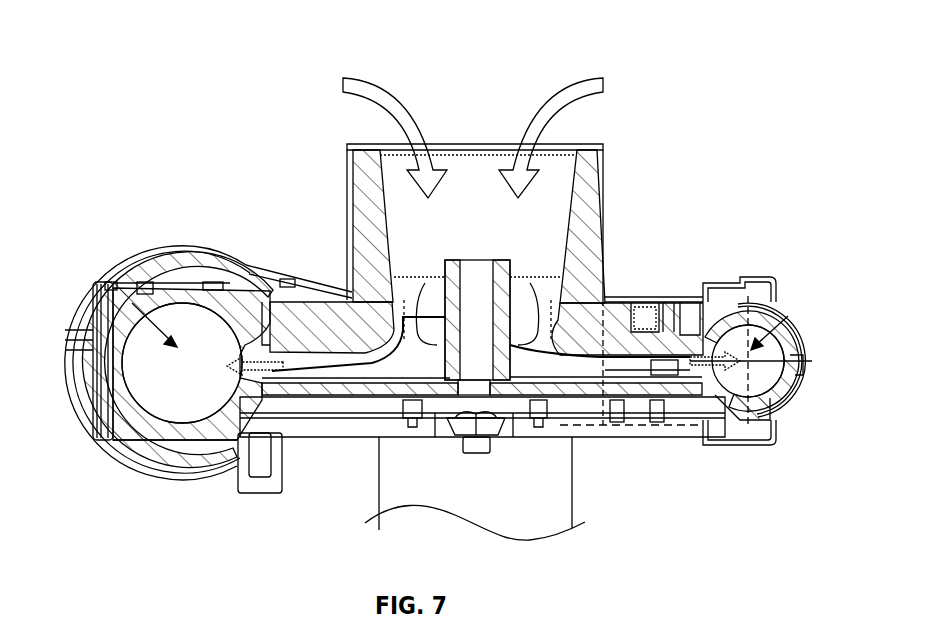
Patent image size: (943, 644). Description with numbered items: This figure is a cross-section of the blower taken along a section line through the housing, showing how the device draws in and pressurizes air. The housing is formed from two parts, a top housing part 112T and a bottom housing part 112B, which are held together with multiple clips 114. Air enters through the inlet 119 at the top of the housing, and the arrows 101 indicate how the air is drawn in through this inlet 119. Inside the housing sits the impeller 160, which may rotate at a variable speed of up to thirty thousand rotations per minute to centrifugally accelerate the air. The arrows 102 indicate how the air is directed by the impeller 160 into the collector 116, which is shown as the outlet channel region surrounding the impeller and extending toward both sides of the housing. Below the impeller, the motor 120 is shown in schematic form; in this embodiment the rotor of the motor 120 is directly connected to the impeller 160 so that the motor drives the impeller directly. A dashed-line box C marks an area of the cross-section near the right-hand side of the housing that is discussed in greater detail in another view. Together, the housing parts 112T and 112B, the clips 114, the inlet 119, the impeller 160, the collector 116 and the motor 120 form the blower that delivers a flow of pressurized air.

The arrows 101 is at (352, 78).
The inlet 119 is at (456, 99).
The top housing part 112T is at (138, 262).
The bottom housing part 112B is at (137, 460).
The clips 114 is at (95, 428).
The collector 116 is at (93, 283).
The impeller 160 is at (538, 357).
The arrows 102 is at (215, 445).
The motor 120 is at (385, 492).
The dashed-line box C is at (653, 300).